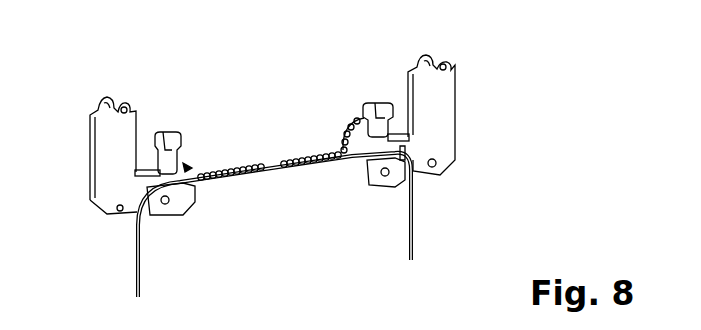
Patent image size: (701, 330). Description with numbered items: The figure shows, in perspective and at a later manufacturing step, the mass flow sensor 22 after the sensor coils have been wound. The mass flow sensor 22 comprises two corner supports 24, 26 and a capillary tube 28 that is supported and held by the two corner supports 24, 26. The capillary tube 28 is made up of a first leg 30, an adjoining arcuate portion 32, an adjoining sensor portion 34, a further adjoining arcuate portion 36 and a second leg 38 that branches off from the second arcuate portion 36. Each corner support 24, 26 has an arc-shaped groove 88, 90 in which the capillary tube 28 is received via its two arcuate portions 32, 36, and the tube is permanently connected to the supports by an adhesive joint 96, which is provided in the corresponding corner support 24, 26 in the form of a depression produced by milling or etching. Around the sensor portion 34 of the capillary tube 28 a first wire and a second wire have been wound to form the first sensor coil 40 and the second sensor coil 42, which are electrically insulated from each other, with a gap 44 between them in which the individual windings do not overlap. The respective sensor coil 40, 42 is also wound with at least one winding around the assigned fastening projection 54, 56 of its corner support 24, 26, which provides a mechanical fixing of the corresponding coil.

The mass flow sensor 22 is at (290, 120).
The corner support 24 is at (107, 147).
The corner support 26 is at (437, 108).
The capillary tube 28 is at (406, 254).
The first leg 30 is at (134, 278).
The arcuate portion 32 is at (143, 214).
The sensor portion 34 is at (281, 168).
The arcuate portion 36 is at (413, 173).
The second leg 38 is at (415, 228).
The first sensor coil 40 is at (215, 157).
The second sensor coil 42 is at (335, 140).
The gap 44 is at (268, 157).
The fastening projection 54 is at (170, 133).
The fastening projection 56 is at (378, 105).
The arc-shaped groove 88 is at (147, 185).
The arc-shaped groove 90 is at (404, 147).
The adhesive joint 96 is at (160, 217).